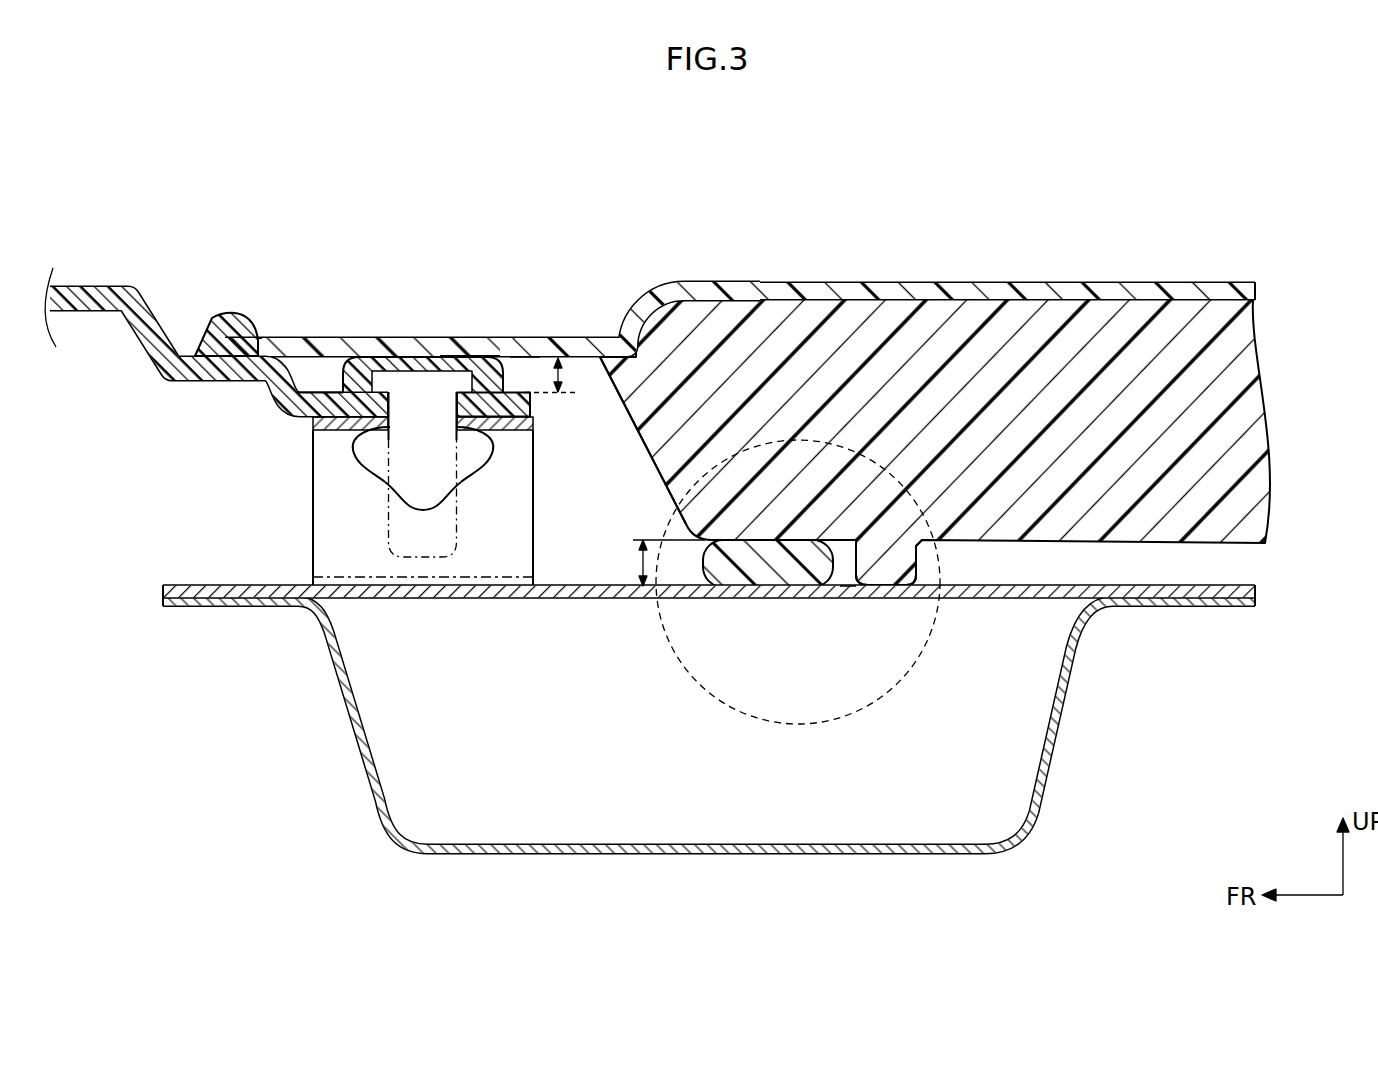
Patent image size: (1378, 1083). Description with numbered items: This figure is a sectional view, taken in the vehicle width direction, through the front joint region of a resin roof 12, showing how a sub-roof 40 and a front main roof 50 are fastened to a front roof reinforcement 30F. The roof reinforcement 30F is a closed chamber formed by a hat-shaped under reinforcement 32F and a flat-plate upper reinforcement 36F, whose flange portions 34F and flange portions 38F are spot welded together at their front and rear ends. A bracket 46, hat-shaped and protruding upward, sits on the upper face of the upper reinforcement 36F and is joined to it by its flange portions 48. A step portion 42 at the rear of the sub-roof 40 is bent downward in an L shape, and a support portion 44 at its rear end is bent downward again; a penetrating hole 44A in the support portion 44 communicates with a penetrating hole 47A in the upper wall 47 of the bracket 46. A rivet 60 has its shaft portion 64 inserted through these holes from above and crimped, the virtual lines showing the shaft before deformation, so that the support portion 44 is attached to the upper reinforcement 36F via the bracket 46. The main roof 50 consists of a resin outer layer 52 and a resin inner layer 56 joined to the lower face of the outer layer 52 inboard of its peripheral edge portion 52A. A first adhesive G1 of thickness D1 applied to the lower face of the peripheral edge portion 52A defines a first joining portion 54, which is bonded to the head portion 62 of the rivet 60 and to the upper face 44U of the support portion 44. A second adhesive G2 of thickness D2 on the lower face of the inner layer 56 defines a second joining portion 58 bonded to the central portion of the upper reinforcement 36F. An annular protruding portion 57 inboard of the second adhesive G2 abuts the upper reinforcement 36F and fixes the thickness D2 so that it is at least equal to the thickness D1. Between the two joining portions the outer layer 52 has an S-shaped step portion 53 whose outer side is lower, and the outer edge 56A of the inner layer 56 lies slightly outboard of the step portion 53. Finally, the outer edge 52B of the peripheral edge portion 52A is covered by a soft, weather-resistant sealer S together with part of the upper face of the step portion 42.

The roof 12 is at (691, 497).
The roof reinforcement at the front side 30F is at (714, 679).
The under reinforcement 32F is at (1055, 740).
The flange portions 34F is at (165, 600).
The upper reinforcement 36F is at (575, 600).
The flange portions 38F is at (165, 590).
The sub-roof 40 is at (287, 284).
The step portion 42 is at (170, 327).
The support portion 44 is at (398, 423).
The penetrating holes 44A is at (437, 368).
The upper face 44U is at (317, 390).
The brackets 46 is at (306, 533).
The upper wall 47 is at (312, 422).
The penetrating hole 47A is at (387, 482).
The flange portions 48 is at (500, 575).
The main roof 50 is at (755, 444).
The outer layer 52 is at (875, 283).
The peripheral edge portion 52A is at (337, 345).
The outer edge 52B is at (213, 312).
The step portion 53 is at (623, 288).
The first joining portion 54 is at (448, 388).
The inner layer 56 is at (947, 505).
The outer edge 56A is at (600, 372).
The protruding portion 57 is at (893, 585).
The second joining portion 58 is at (768, 585).
The rivets 60 is at (478, 475).
The head portions 62 is at (470, 352).
The shaft portions 64 is at (420, 512).
The sealer S is at (238, 320).
The first adhesive G1 is at (548, 372).
The second adhesive G2 is at (735, 585).
The thickness of the first adhesive D1 is at (561, 356).
The thickness of the second adhesive D2 is at (643, 595).